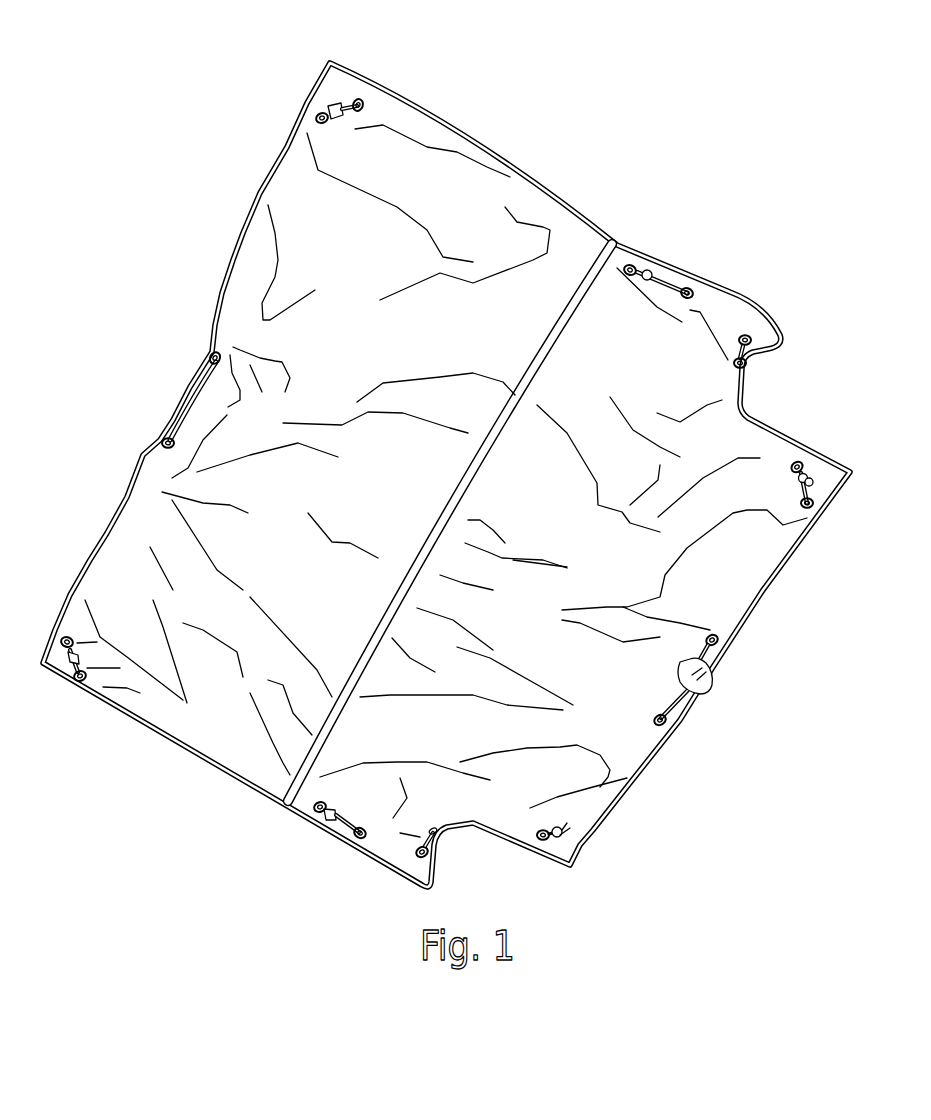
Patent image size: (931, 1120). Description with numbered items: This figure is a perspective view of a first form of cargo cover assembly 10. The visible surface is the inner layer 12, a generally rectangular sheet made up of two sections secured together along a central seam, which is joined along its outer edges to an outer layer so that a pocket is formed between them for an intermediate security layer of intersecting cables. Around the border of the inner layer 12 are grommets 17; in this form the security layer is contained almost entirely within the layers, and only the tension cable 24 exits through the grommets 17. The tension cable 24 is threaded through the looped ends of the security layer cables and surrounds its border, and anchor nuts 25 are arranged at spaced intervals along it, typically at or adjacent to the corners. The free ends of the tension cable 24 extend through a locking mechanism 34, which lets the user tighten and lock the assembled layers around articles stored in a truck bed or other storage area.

The cover assembly 10 is at (203, 273).
The inner layer 12 is at (540, 210).
The grommets 17 is at (365, 100).
The tension cable 24 is at (672, 717).
The anchor nuts 25 is at (650, 270).
The locking mechanism 34 is at (713, 685).